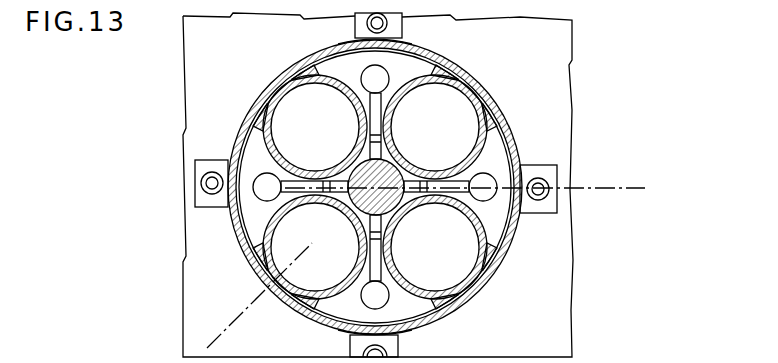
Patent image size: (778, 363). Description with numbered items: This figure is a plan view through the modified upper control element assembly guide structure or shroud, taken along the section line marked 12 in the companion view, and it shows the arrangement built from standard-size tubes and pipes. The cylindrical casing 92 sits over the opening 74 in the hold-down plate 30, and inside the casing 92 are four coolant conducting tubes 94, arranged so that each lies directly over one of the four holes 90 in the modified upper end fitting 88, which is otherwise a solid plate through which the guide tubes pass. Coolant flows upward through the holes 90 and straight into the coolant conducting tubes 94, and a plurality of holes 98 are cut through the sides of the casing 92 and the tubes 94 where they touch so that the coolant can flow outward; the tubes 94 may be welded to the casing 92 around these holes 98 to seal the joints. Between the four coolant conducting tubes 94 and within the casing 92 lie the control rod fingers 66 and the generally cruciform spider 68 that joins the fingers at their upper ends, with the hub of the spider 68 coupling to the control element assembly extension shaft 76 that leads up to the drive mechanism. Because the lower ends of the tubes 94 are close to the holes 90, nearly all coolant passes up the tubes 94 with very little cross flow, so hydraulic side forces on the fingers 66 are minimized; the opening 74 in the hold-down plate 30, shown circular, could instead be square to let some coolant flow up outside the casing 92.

The hold-down plate 30 is at (563, 90).
The opening in hold-down plate 74 is at (278, 84).
The holes in casing and tubes 98 is at (264, 90).
The spider 68 is at (352, 155).
The holes in upper end fitting 90 is at (318, 86).
The coolant conducting tubes 94 is at (243, 133).
The control element assembly extension shaft 76 is at (356, 196).
The control rod fingers 66 is at (385, 78).
The cylindrical casing 92 is at (477, 85).
The upper end fitting 88 is at (450, 313).
The section line 12- 12 is at (615, 228).